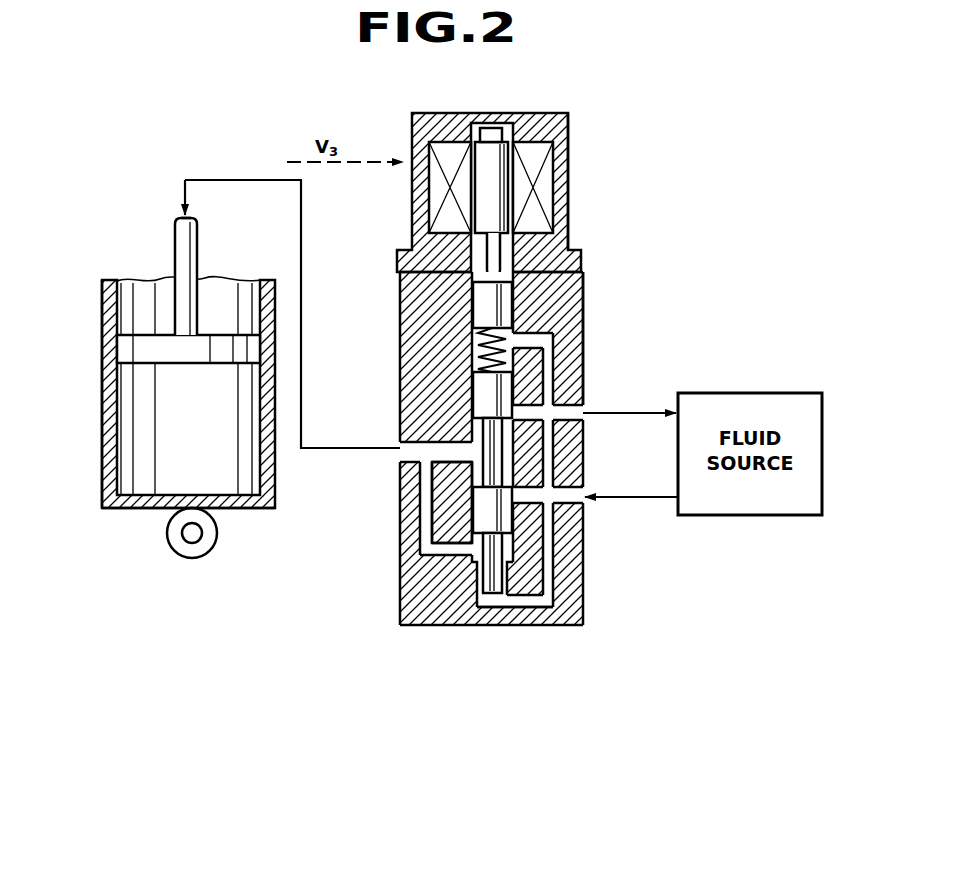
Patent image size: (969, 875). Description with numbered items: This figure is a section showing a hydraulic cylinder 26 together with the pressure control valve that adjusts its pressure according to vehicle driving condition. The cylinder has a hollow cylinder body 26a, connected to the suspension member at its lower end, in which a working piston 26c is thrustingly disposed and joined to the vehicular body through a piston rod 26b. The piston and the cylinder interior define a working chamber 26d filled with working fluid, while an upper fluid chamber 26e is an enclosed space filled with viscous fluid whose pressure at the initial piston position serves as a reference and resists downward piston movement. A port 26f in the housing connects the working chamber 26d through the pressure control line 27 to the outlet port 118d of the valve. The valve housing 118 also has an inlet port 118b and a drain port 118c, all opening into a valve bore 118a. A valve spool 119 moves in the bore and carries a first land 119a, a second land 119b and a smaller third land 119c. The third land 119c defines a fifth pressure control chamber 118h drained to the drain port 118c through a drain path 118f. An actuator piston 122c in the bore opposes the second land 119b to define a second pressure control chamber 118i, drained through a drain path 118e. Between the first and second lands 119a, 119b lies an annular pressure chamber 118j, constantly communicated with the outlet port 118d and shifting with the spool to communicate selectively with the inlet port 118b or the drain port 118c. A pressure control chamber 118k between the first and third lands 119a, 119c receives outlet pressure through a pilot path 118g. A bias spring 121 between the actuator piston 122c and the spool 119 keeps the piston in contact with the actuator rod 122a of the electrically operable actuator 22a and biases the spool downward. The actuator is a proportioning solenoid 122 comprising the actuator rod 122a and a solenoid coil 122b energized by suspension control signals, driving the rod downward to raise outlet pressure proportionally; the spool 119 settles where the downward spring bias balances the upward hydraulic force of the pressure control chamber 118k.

The hydraulic cylinder 26 is at (100, 411).
The cylinder body 26a is at (107, 445).
The piston rod 26b is at (190, 248).
The working piston 26c is at (195, 355).
The working chamber 26d is at (127, 512).
The upper fluid chamber 26e is at (143, 310).
The port 26f is at (180, 214).
The pressure control line 27 is at (240, 180).
The electrically operable actuator 22a is at (568, 160).
The proportioning solenoid 122 is at (408, 120).
The actuator rod 122a is at (493, 257).
The solenoid coil 122b is at (532, 147).
The actuator piston 122c is at (477, 290).
The valve housing 118 is at (408, 630).
The valve bore 118a is at (473, 345).
The inlet port 118b is at (577, 503).
The drain port 118c is at (540, 380).
The outlet port 118d is at (432, 447).
The drain path 118e is at (552, 343).
The drain path 118f is at (530, 606).
The pilot path 118g is at (465, 555).
The fifth pressure control chamber 118h is at (512, 614).
The second pressure control chamber 118i is at (573, 312).
The annular pressure chamber 118j is at (565, 412).
The pressure control chamber 118k is at (500, 602).
The valve spool 119 is at (480, 515).
The first land 119a is at (450, 482).
The second land 119b is at (477, 395).
The third land 119c is at (482, 580).
The bias spring 121 is at (477, 362).